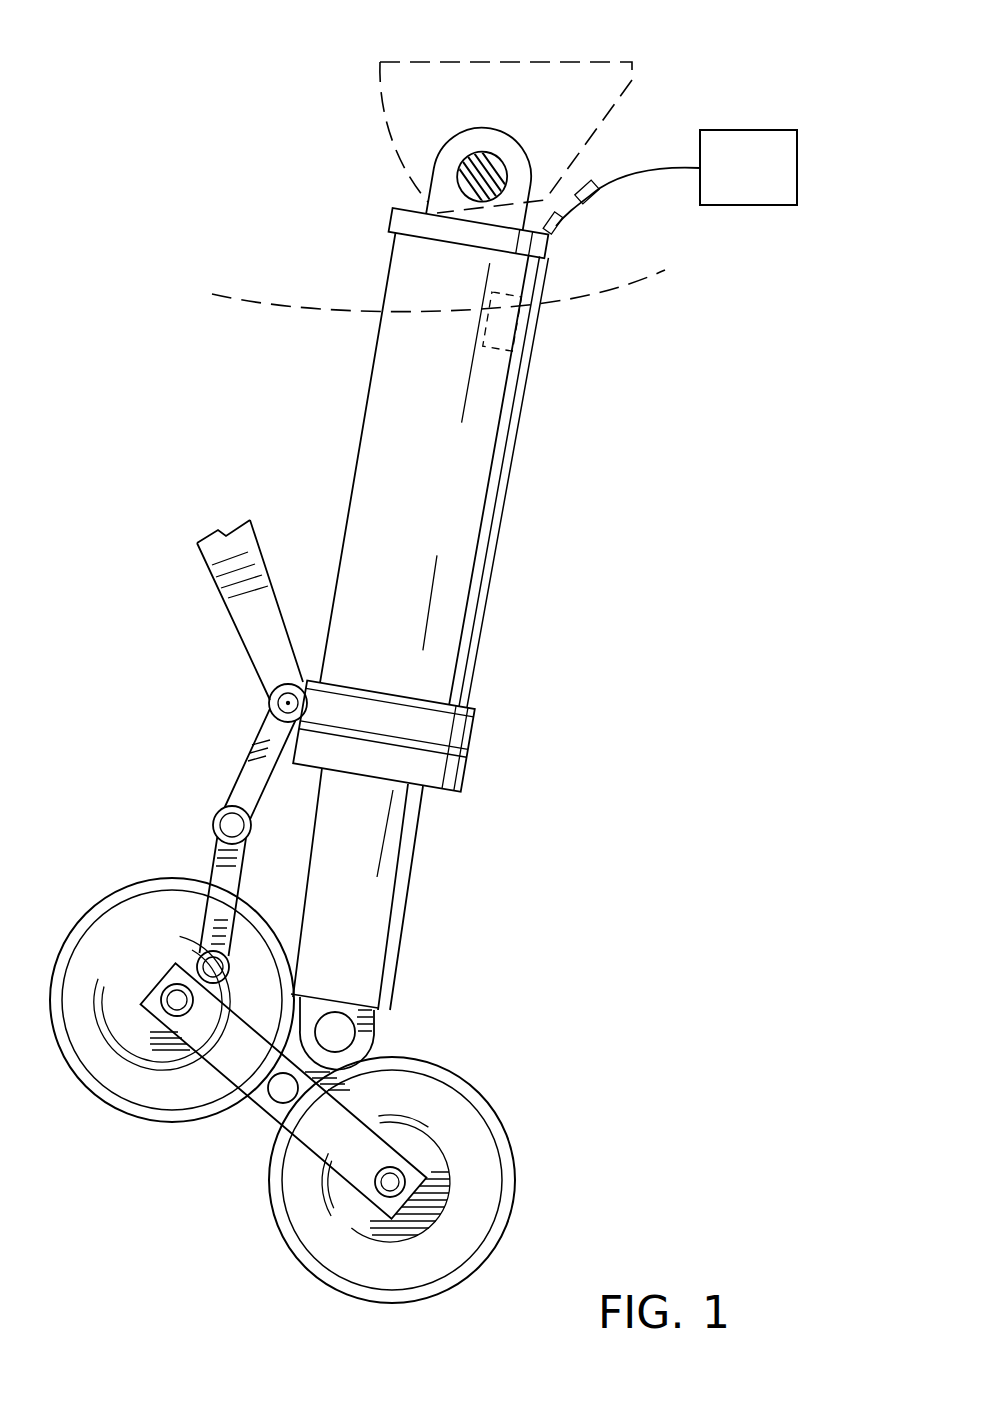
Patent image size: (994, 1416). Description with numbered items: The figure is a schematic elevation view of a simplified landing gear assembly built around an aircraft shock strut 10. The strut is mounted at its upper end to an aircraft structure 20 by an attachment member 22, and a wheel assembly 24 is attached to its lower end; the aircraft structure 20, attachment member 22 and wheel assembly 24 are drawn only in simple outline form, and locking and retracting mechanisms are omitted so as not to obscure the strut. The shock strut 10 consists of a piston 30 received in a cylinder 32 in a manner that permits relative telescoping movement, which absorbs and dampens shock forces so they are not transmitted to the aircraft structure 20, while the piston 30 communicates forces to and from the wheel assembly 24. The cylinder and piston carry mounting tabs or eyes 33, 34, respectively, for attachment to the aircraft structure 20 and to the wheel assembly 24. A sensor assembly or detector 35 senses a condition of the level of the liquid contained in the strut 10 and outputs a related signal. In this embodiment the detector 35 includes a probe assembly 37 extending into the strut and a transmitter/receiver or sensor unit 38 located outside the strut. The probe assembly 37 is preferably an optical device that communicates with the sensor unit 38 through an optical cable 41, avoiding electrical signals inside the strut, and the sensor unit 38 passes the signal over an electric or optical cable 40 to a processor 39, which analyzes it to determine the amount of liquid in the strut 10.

The aircraft shock strut 10 is at (478, 599).
The aircraft structure 20 is at (615, 283).
The attachment member 22 is at (632, 85).
The wheel assembly 24 is at (536, 1164).
The piston 30 is at (393, 880).
The cylinder 32 is at (498, 422).
The mounting tab 33 is at (518, 165).
The mounting tab 34 is at (362, 1037).
The sensor assembly 35 is at (628, 329).
The probe assembly 37 is at (505, 330).
The sensor unit 38 is at (593, 198).
The processor 39 is at (797, 155).
The cable 40 is at (622, 177).
The optical cable 41 is at (578, 212).